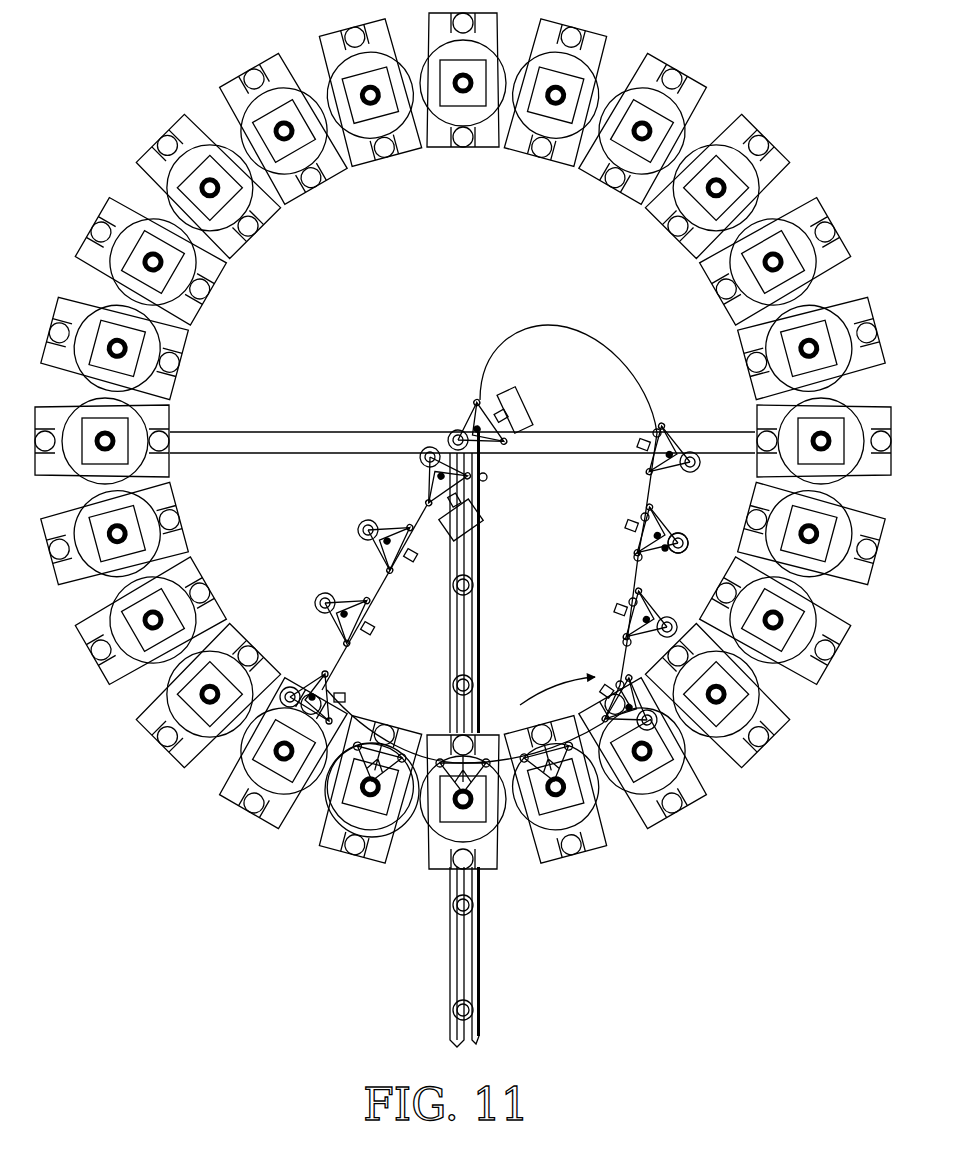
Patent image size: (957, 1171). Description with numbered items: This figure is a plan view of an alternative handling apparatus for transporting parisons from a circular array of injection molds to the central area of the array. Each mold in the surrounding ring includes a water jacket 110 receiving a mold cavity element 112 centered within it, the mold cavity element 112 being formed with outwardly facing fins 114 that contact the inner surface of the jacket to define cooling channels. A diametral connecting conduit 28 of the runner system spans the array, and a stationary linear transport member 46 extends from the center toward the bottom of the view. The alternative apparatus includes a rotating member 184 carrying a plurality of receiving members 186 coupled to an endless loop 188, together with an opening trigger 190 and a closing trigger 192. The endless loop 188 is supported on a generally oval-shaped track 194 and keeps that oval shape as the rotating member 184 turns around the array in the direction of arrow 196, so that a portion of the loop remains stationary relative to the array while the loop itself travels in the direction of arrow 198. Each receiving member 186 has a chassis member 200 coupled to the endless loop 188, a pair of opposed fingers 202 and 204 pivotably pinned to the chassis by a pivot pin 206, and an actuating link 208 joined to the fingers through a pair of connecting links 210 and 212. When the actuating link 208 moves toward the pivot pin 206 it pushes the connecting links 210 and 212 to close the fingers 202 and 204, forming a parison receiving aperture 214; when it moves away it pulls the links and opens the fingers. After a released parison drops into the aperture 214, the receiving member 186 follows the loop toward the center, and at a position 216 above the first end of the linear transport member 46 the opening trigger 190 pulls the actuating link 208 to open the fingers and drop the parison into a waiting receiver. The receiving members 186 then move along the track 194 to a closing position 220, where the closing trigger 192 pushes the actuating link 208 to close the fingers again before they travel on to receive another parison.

The diametral connecting conduit 28 is at (325, 432).
The linear transport member 46 is at (482, 619).
The water jacket 110 is at (395, 830).
The mold cavity element 112 is at (368, 828).
The outwardly facing fins 114 is at (352, 803).
The rotating member 184 is at (400, 506).
The receiving members 186 is at (327, 594).
The endless loop 188 is at (377, 587).
The opening trigger 190 is at (487, 510).
The closing trigger 192 is at (524, 398).
The oval-shaped track 194 is at (637, 356).
The arrow 196 is at (556, 693).
The arrow 198 is at (430, 580).
The chassis member 200 is at (570, 592).
The finger 202 is at (670, 552).
The finger 204 is at (688, 548).
The pivot pin 206 is at (650, 535).
The actuating link 208 is at (638, 550).
The connecting link 210 is at (628, 640).
The connecting link 212 is at (628, 618).
The parison receiving aperture 214 is at (648, 622).
The position 216 is at (487, 477).
The closing position 220 is at (460, 398).